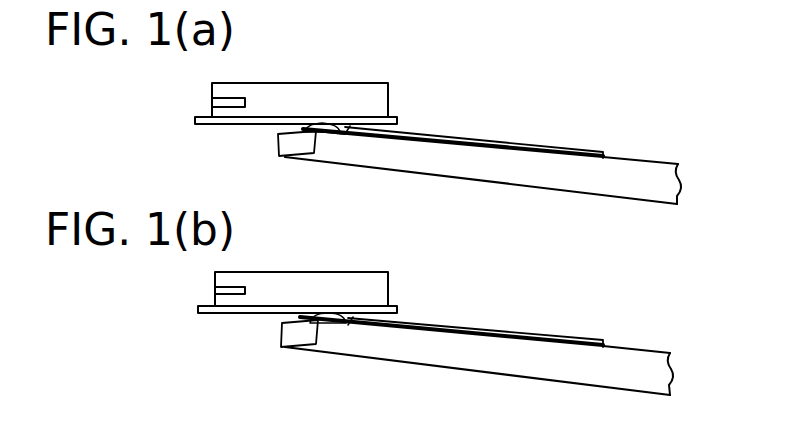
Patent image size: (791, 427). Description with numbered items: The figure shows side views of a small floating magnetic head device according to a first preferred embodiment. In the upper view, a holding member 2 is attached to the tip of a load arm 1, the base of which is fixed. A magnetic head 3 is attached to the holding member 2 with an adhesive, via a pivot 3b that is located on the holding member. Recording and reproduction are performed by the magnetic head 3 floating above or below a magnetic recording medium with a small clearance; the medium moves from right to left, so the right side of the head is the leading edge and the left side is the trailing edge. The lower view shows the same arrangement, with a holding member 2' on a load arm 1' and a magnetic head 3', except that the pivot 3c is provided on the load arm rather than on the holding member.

In FIG. 1A, the load arm 1 is at (483, 161).
In FIG. 1A, the holding member 2 is at (453, 122).
In FIG. 1A, the magnetic head 3 is at (296, 82).
In FIG. 1A, the pivot 3b is at (314, 126).
In FIG. 1B, the load arm 1' is at (479, 354).
In FIG. 1B, the holding member 2' is at (451, 317).
In FIG. 1B, the magnetic head 3' is at (297, 270).
In FIG. 1B, the pivot 3c is at (325, 320).